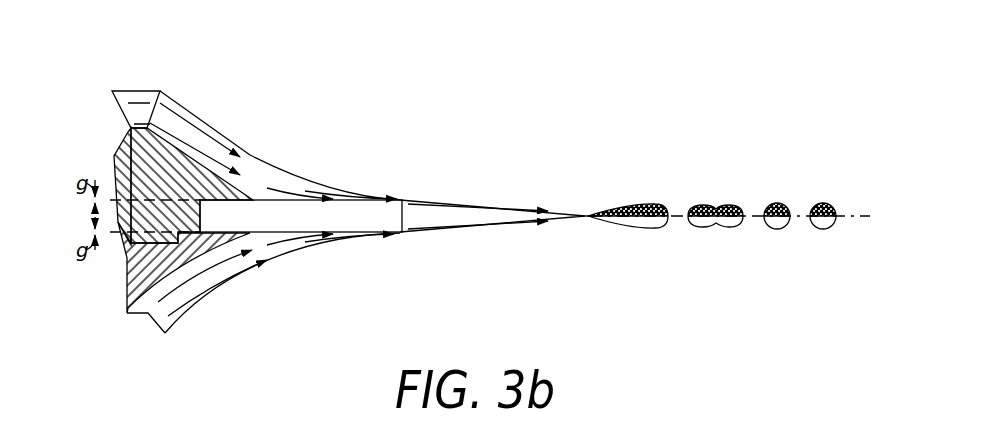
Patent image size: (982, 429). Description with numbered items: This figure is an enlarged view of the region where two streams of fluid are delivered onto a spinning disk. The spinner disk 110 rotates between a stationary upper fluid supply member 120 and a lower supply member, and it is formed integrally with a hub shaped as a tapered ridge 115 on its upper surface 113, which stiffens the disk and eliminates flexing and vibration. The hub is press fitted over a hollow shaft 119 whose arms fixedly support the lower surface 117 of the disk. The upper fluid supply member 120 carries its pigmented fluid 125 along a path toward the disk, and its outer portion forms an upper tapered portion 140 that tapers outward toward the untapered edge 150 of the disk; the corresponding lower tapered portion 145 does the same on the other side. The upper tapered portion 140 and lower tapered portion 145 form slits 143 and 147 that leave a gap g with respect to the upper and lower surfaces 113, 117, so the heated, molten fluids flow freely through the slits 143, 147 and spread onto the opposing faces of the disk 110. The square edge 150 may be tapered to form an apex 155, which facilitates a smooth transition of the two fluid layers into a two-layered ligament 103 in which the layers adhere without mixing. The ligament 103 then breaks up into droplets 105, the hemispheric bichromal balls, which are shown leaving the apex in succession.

The upper fluid supply member 120 is at (150, 93).
The pigmented fluid 125 is at (213, 128).
The tapered ridge 115 is at (122, 157).
The hollow shaft 119 is at (132, 260).
The upper tapered portion 140 is at (278, 177).
The slit 143 is at (322, 187).
The upper surface 113 is at (357, 195).
The spinner disk 110 is at (375, 222).
The lower tapered portion 145 is at (236, 283).
The slit 147 is at (303, 234).
The lower surface 117 is at (347, 232).
The untapered edge 150 is at (410, 200).
The apex 155 is at (568, 215).
The ligament 103 is at (630, 204).
The droplets 105 is at (802, 193).